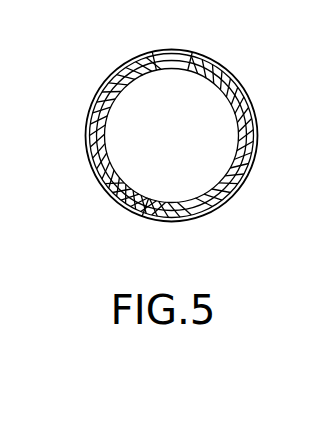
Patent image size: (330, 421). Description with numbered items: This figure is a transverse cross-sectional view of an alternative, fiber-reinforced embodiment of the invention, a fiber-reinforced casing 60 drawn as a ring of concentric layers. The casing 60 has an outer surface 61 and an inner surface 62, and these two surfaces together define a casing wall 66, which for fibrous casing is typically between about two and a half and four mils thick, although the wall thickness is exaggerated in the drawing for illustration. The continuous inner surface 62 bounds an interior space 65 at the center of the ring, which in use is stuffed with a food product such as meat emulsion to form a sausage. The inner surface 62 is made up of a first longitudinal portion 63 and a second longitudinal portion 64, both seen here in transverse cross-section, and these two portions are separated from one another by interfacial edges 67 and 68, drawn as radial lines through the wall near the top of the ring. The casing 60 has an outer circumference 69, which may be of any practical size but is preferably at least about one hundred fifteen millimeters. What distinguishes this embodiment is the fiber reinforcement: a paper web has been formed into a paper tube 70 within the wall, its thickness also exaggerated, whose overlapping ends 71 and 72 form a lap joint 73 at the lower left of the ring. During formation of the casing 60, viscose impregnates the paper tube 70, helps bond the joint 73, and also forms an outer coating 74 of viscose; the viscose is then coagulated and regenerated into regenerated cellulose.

The fiber-reinforced casing 60 is at (82, 83).
The outer surface 61 is at (108, 195).
The inner surface 62 is at (100, 96).
The first longitudinal portion 63 is at (256, 110).
The second longitudinal portion 64 is at (185, 64).
The interior space 65 is at (172, 136).
The casing wall 66 is at (235, 205).
The interfacial edge 67 is at (152, 51).
The interfacial edge 68 is at (192, 51).
The outer circumference 69 is at (255, 160).
The paper tube 70 is at (240, 175).
The overlapping end 71 is at (150, 198).
The overlapping end 72 is at (142, 206).
The lap joint 73 is at (127, 210).
The outer coating 74 is at (93, 147).